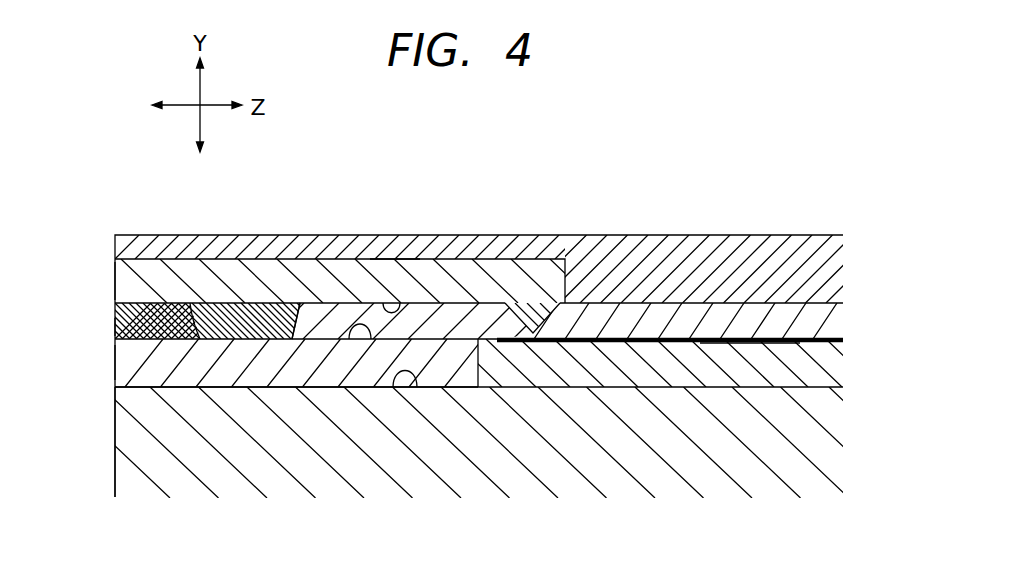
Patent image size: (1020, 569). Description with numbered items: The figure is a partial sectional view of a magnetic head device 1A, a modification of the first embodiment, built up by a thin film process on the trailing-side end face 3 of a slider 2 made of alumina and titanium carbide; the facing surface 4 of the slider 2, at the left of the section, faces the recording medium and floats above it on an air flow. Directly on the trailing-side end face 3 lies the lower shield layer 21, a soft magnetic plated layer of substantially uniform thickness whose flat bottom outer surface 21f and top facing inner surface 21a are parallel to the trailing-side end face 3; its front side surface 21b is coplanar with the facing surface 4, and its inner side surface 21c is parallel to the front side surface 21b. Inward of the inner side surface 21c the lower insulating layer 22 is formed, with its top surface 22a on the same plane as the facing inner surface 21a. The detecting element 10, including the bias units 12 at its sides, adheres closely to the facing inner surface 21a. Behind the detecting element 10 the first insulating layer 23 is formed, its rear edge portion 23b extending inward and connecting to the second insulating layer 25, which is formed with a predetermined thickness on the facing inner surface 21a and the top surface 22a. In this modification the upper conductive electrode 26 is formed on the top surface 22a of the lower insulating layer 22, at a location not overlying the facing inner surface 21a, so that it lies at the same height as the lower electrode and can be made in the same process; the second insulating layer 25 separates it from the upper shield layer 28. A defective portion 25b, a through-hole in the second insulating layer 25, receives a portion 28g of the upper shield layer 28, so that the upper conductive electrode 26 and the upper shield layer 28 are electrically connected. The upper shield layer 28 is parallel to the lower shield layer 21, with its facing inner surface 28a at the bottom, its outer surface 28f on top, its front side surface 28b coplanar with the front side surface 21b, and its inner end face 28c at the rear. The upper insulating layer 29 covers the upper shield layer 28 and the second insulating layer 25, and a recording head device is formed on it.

The magnetic head device 1A is at (634, 172).
The slider 2 is at (106, 470).
The trailing-side end face 3 is at (408, 368).
The facing surface 4 is at (115, 412).
The detecting element 10 is at (106, 318).
The bias unit 12 is at (115, 327).
The lower shield layer 21 is at (241, 386).
The facing inner surface 21a is at (372, 340).
The front side surface 21b is at (115, 355).
The inner side surface 21c is at (482, 347).
The outer surface 21f is at (280, 387).
The lower insulating layer 22 is at (640, 360).
The top surface of the lower insulating layer 22a is at (753, 343).
The first insulating layer 23 is at (230, 309).
The rear edge portion 23b is at (312, 313).
The second insulating layer 25 is at (456, 310).
The defective portion 25b is at (531, 328).
The upper conductive electrode 26 is at (843, 340).
The upper shield layer 28 is at (160, 276).
The facing inner surface 28a is at (385, 306).
The front side surface 28b is at (115, 275).
The inner end face 28c is at (580, 259).
The outer surface 28f is at (423, 245).
The filled portion of upper shield 28g is at (516, 312).
The upper insulating layer 29 is at (388, 259).